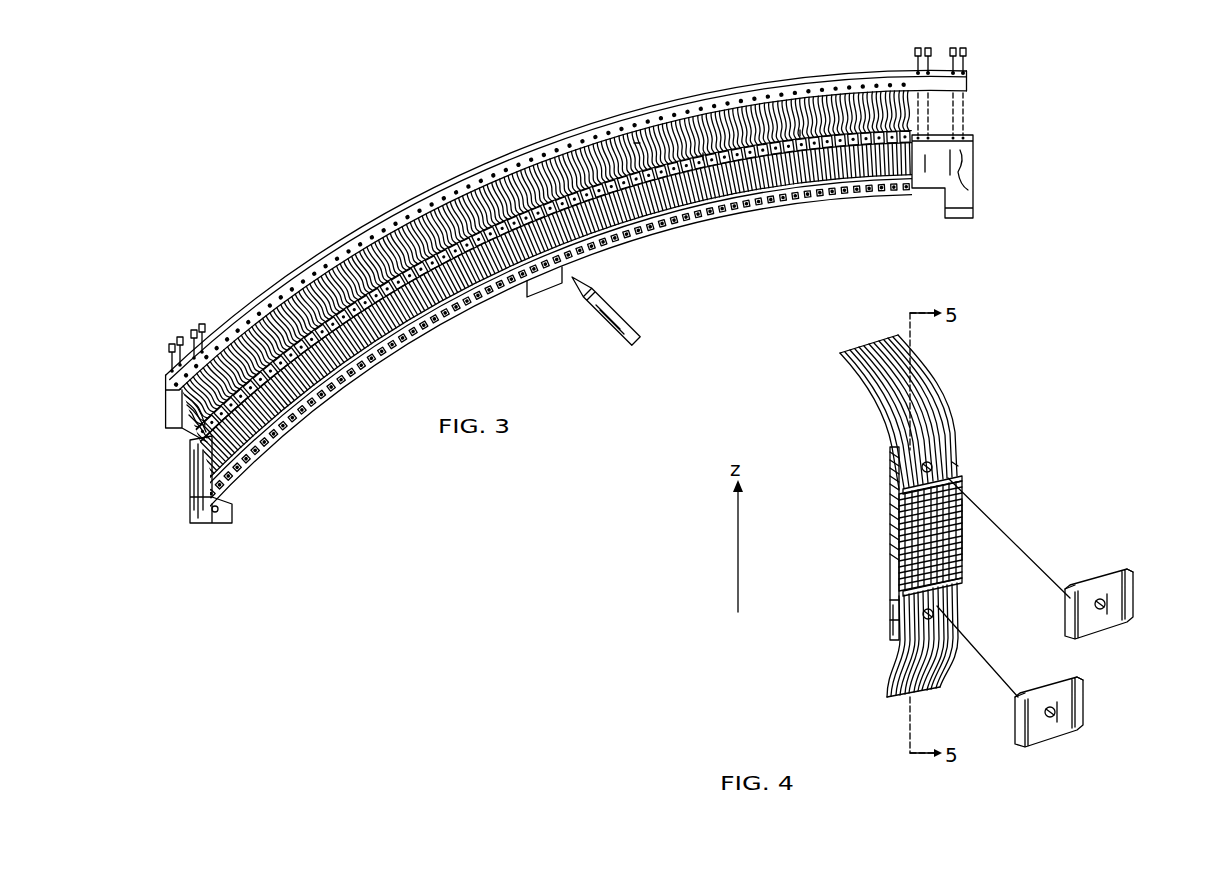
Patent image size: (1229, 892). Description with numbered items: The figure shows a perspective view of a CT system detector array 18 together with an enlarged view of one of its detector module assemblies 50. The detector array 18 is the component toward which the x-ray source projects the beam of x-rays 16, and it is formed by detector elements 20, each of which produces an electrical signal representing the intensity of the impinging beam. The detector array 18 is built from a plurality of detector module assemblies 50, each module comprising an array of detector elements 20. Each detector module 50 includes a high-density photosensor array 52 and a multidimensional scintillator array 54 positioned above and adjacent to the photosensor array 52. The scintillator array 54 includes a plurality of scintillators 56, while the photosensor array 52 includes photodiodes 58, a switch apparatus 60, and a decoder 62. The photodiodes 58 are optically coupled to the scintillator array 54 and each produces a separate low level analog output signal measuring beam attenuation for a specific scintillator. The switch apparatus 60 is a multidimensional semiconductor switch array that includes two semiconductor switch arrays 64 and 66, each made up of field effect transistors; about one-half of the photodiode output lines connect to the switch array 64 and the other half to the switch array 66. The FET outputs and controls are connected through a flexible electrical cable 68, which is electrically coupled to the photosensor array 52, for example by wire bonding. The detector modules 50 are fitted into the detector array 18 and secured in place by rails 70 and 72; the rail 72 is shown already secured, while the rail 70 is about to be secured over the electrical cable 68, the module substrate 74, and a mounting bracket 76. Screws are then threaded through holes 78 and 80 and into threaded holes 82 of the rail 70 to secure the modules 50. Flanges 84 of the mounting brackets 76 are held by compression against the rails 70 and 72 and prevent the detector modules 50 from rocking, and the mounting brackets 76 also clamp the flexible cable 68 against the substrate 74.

In FIG. 3, the beam of x-rays 16 is at (607, 325).
In FIG. 3, the detector array 18 is at (447, 105).
In FIG. 3, the detector elements 20 is at (703, 153).
In FIG. 3, the detector module assembly 50 is at (888, 190).
In FIG. 4, the detector module assembly 50 is at (862, 661).
In FIG. 4, the photosensor array 52 is at (888, 574).
In FIG. 4, the scintillator array 54 is at (972, 546).
In FIG. 4, the scintillators 56 is at (965, 512).
In FIG. 4, the photodiodes 58 is at (897, 558).
In FIG. 4, the switch apparatus 60 is at (967, 489).
In FIG. 4, the decoder 62 is at (968, 478).
In FIG. 4, the semiconductor switch array 64 is at (893, 492).
In FIG. 4, the semiconductor switch array 66 is at (903, 603).
In FIG. 3, the flexible electrical cable 68 is at (190, 441).
In FIG. 4, the flexible electrical cable 68 is at (852, 348).
In FIG. 3, the rail 70 is at (278, 283).
In FIG. 3, the rail 72 is at (307, 410).
In FIG. 4, the substrate 74 is at (893, 503).
In FIG. 3, the mounting bracket 76 is at (637, 143).
In FIG. 4, the mounting bracket 76 is at (1050, 735).
In FIG. 4, the hole 78 is at (955, 458).
In FIG. 4, the hole 80 is at (1131, 582).
In FIG. 3, the threaded holes 82 is at (348, 257).
In FIG. 4, the flanges 84 is at (1133, 597).